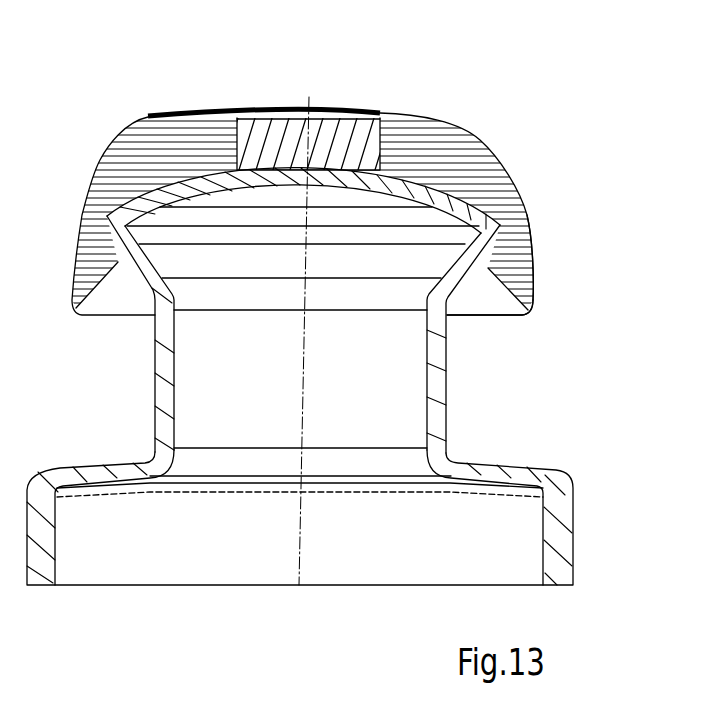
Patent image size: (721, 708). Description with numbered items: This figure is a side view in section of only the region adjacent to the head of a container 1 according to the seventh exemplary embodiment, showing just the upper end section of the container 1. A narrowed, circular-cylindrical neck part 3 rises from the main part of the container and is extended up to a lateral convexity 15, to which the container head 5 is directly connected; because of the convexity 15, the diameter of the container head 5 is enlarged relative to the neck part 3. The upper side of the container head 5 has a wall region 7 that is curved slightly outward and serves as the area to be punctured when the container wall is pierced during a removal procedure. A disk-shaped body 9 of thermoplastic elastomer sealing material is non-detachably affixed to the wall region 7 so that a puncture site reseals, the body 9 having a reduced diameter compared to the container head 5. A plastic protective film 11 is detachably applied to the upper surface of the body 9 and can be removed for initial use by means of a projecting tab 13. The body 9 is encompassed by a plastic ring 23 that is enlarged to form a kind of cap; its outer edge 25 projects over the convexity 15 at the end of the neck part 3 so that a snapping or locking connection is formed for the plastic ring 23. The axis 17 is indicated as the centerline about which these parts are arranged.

The container 1 is at (558, 545).
The neck part 3 is at (438, 413).
The container head 5 is at (375, 238).
The wall region 7 is at (87, 194).
The disk-shaped body 9 is at (362, 112).
The protective film 11 is at (311, 113).
The projecting tab 13 is at (167, 113).
The lateral convexity 15 is at (533, 242).
The central axis 17 is at (299, 537).
The plastic ring 23 is at (482, 173).
The outer edge 25 is at (535, 308).